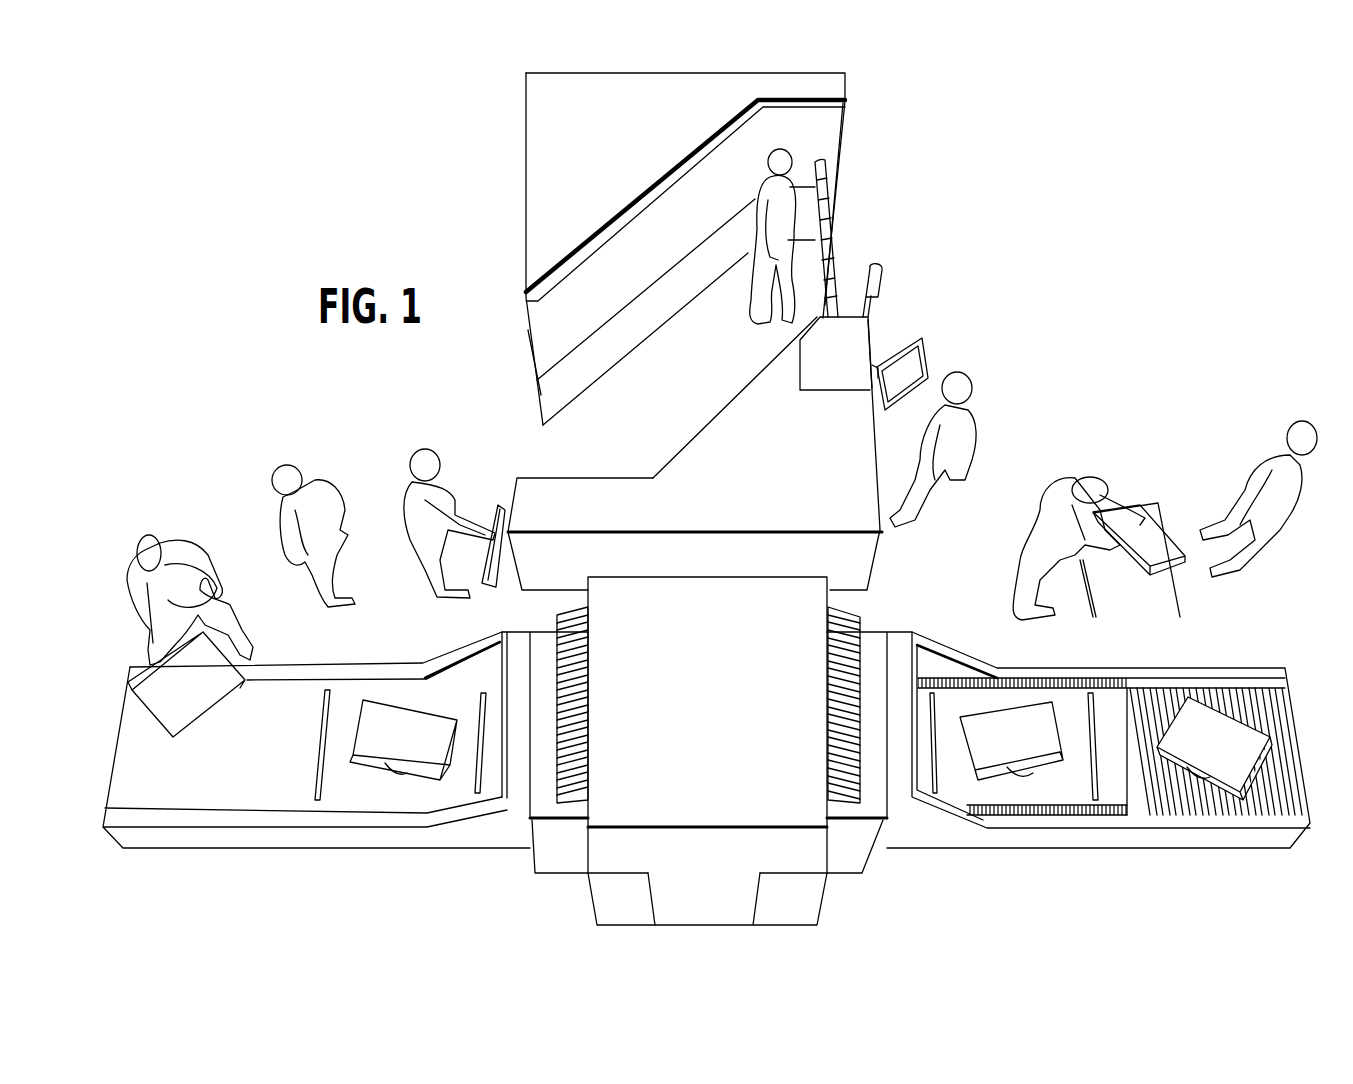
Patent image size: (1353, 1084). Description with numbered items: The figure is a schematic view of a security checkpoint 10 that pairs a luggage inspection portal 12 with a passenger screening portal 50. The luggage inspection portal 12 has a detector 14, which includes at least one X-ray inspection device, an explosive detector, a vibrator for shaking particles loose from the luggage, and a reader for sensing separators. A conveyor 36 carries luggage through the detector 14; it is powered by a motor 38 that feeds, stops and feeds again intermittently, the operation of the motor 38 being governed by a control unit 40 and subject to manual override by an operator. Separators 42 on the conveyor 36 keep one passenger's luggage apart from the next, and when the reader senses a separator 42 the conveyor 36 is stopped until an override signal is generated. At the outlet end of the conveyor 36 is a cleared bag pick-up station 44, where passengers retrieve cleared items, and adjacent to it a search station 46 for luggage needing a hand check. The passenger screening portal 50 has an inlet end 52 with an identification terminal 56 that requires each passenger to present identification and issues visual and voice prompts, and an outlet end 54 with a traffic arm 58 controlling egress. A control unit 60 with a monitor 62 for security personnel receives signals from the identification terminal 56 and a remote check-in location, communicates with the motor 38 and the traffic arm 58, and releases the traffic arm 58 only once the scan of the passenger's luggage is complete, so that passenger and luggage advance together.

The security checkpoint 10 is at (375, 445).
The luggage inspection portal 12 is at (214, 507).
The detector 14 is at (718, 637).
The conveyor 36 is at (100, 720).
The motor 38 is at (603, 895).
The control unit 40 is at (810, 895).
The separators 42 is at (282, 795).
The cleared bag pick-up station 44 is at (1277, 695).
The search station 46 is at (1160, 502).
The passenger screening portal 50 is at (496, 284).
The inlet end 52 is at (534, 341).
The outlet end 54 is at (832, 125).
The identification terminal 56 is at (497, 512).
The traffic arm 58 is at (825, 253).
The control unit 60 is at (865, 338).
The monitor 62 is at (927, 355).